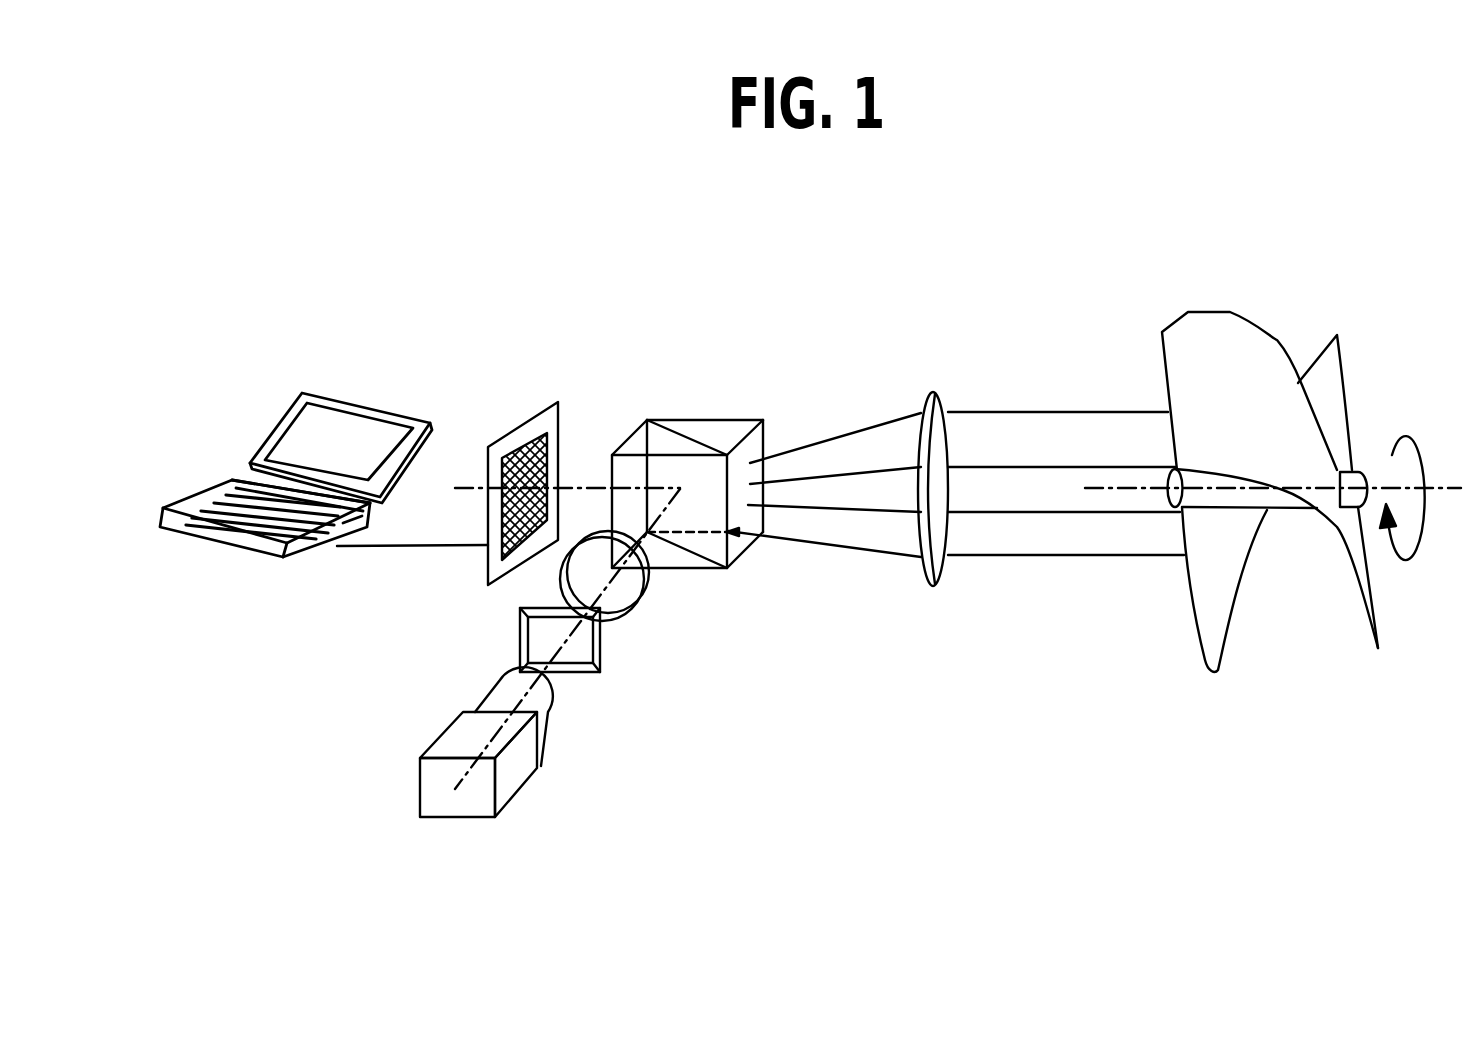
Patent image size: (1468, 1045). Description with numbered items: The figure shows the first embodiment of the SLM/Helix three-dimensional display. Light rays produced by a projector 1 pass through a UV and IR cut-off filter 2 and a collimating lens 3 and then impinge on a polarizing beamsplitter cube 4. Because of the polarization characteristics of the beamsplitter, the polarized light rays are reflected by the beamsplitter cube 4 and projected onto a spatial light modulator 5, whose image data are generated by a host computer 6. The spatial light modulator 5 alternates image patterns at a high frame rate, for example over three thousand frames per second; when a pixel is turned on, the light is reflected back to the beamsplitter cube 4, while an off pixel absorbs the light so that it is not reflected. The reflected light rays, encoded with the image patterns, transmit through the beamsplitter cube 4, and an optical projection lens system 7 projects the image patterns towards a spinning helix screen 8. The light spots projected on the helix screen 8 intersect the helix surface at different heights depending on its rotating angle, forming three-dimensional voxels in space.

The projector 1 is at (543, 768).
The UV and IR cut-off filter 2 is at (520, 631).
The collimating lens 3 is at (643, 609).
The polarizing beamsplitter cube 4 is at (728, 420).
The spatial light modulator (SLM) 5 is at (520, 418).
The host computer 6 is at (283, 417).
The optical projection lens system 7 is at (947, 577).
The spinning helix screen 8 is at (1227, 628).